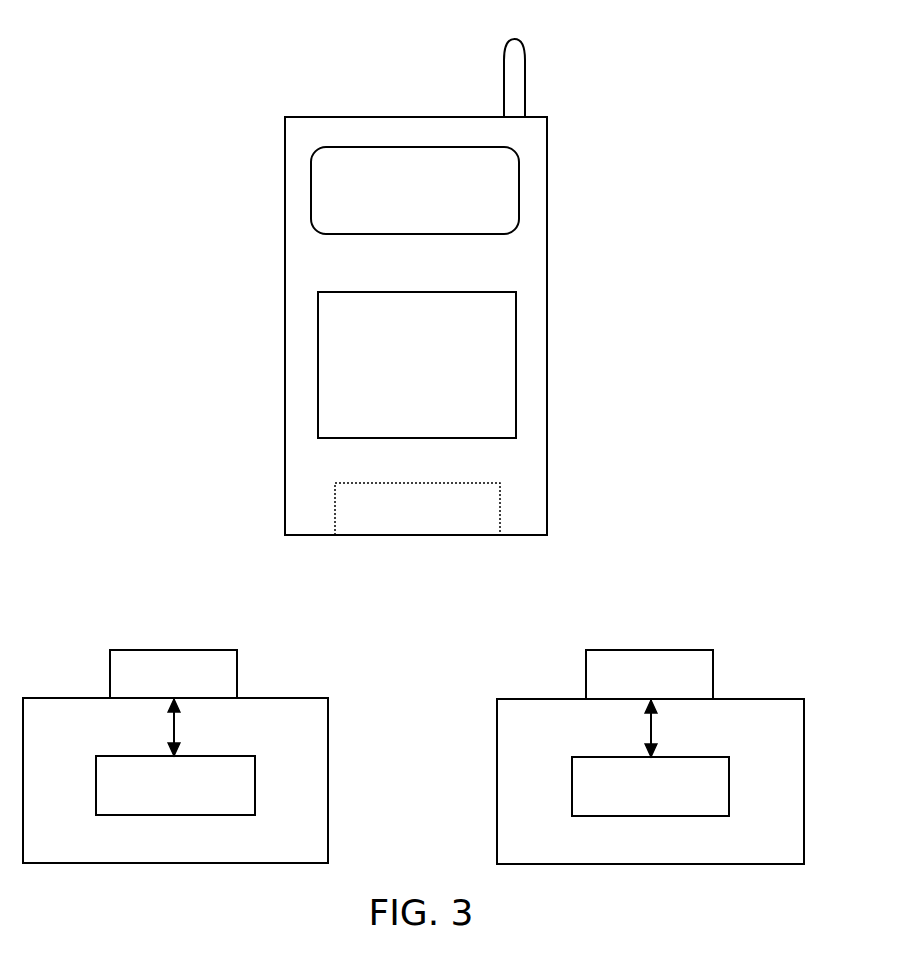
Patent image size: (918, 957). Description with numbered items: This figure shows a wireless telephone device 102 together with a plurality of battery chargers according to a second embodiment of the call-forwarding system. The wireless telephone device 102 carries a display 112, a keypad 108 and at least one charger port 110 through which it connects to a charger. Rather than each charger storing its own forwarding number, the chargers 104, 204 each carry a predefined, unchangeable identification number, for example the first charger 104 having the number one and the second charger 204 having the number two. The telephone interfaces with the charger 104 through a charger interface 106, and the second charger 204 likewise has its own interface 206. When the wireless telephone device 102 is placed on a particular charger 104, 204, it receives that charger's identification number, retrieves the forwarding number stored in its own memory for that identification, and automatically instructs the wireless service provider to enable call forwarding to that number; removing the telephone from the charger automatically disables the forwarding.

The wireless telephone device 102 is at (530, 240).
The charger 104 is at (313, 715).
The charger interface 106 is at (223, 667).
The keypad 108 is at (497, 303).
The charger port 110 is at (481, 490).
The display 112 is at (502, 162).
The charger 204 is at (784, 715).
The transceiver of second computing device 206 is at (698, 667).